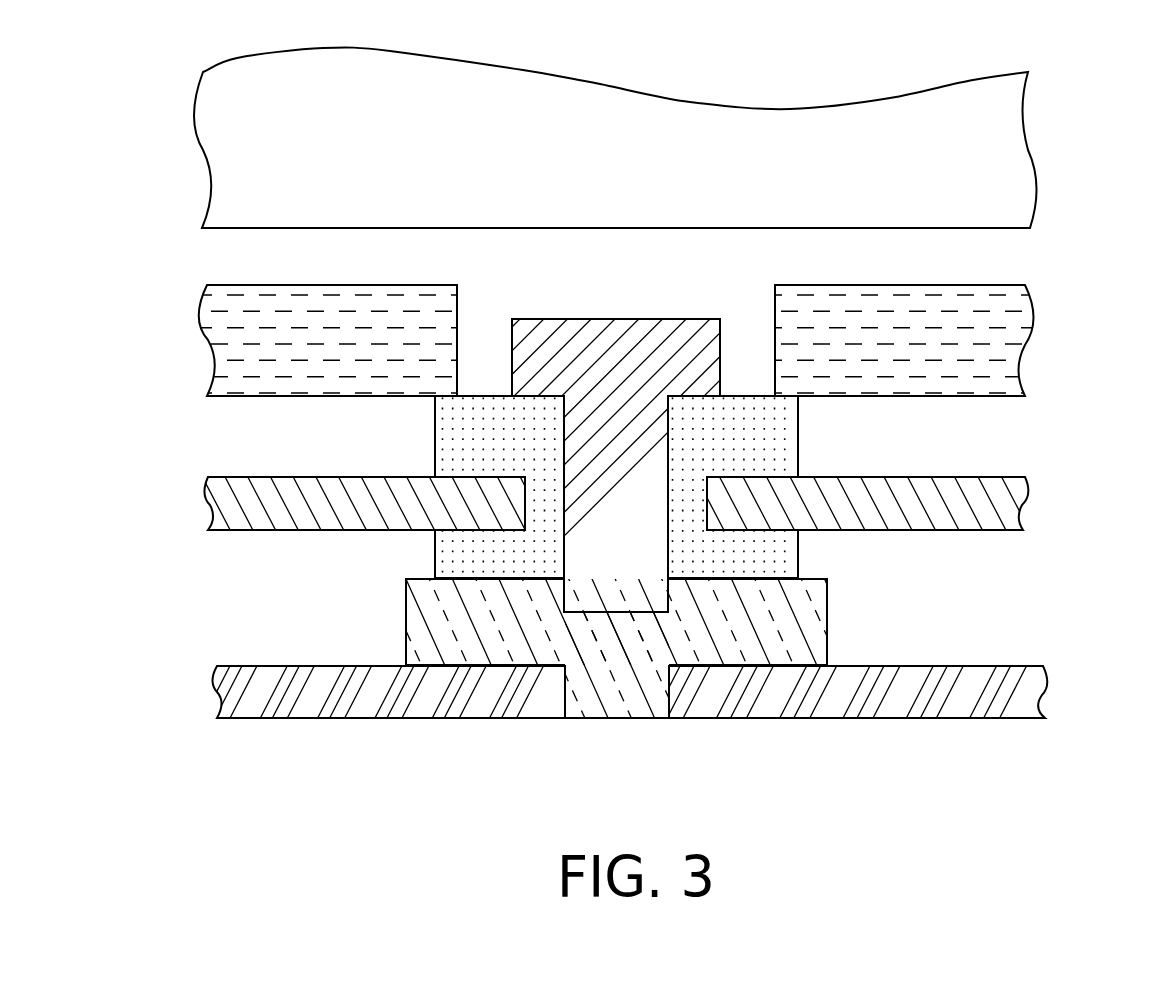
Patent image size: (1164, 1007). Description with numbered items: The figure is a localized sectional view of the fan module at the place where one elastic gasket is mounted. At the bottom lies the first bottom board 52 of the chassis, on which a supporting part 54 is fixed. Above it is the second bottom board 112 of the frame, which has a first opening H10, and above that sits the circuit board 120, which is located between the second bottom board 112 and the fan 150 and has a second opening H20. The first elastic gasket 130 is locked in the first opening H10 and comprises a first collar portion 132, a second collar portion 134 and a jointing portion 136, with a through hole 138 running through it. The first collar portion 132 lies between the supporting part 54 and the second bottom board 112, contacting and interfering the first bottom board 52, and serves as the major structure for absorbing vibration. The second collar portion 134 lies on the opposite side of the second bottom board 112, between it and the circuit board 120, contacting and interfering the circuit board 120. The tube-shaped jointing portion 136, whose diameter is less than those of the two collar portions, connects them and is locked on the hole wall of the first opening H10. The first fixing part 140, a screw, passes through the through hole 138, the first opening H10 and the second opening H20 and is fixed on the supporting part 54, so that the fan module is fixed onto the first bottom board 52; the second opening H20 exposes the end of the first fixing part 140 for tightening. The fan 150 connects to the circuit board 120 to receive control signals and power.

The fan 150 is at (1013, 183).
The circuit board 120 is at (1005, 351).
The second bottom board 112 is at (1005, 506).
The first elastic gasket 130 is at (262, 567).
The first collar portion 132 is at (465, 557).
The second collar portion 134 is at (522, 418).
The jointing portion 136 is at (538, 497).
The first fixing part 140 is at (590, 337).
The through hole 138 is at (672, 552).
The supporting part 54 is at (813, 649).
The first bottom board 52 is at (1015, 692).
The first opening H10 is at (708, 493).
The second opening H20 is at (774, 330).